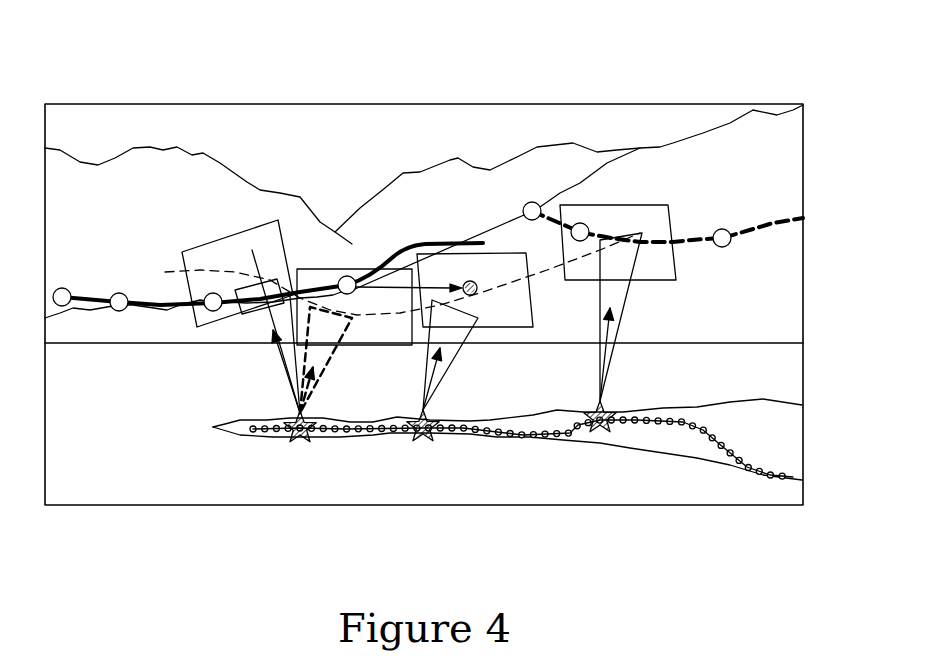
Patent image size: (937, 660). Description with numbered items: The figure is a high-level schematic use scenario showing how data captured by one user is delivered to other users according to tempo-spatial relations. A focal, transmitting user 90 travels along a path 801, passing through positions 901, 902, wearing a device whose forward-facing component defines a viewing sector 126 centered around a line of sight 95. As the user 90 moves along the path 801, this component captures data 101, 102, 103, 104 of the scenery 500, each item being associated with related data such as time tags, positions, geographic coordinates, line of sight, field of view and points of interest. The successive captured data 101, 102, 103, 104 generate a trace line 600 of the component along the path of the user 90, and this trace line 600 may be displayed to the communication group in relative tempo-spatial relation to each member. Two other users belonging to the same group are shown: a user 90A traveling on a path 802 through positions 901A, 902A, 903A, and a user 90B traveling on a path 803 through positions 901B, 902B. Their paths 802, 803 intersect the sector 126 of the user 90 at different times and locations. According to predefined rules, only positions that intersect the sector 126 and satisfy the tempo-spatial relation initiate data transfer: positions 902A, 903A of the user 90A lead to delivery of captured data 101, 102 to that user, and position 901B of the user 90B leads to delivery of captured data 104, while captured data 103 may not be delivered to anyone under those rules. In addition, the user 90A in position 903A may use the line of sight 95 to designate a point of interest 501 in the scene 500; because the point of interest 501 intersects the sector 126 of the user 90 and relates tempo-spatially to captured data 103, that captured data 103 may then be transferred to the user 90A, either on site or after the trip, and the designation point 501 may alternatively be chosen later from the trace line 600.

The user 90A is at (60, 288).
The user 90B is at (532, 202).
The scenery 500 is at (168, 117).
The path 802 is at (90, 293).
The captured data 101 is at (242, 290).
The viewing sector 126 is at (248, 235).
The position 903A is at (297, 268).
The captured data 102 is at (346, 276).
The point of interest 501 is at (468, 280).
The captured data 103 is at (496, 252).
The position 901B is at (580, 223).
The captured data 104 is at (647, 205).
The position 902B is at (722, 229).
The path 803 is at (765, 226).
The position 901A is at (118, 312).
The position 902A is at (203, 312).
The user 90 is at (300, 446).
The trace line 600 is at (375, 433).
The position 901 is at (423, 452).
The line of sight 95 is at (597, 357).
The position 902 is at (614, 425).
The path 801 is at (763, 470).